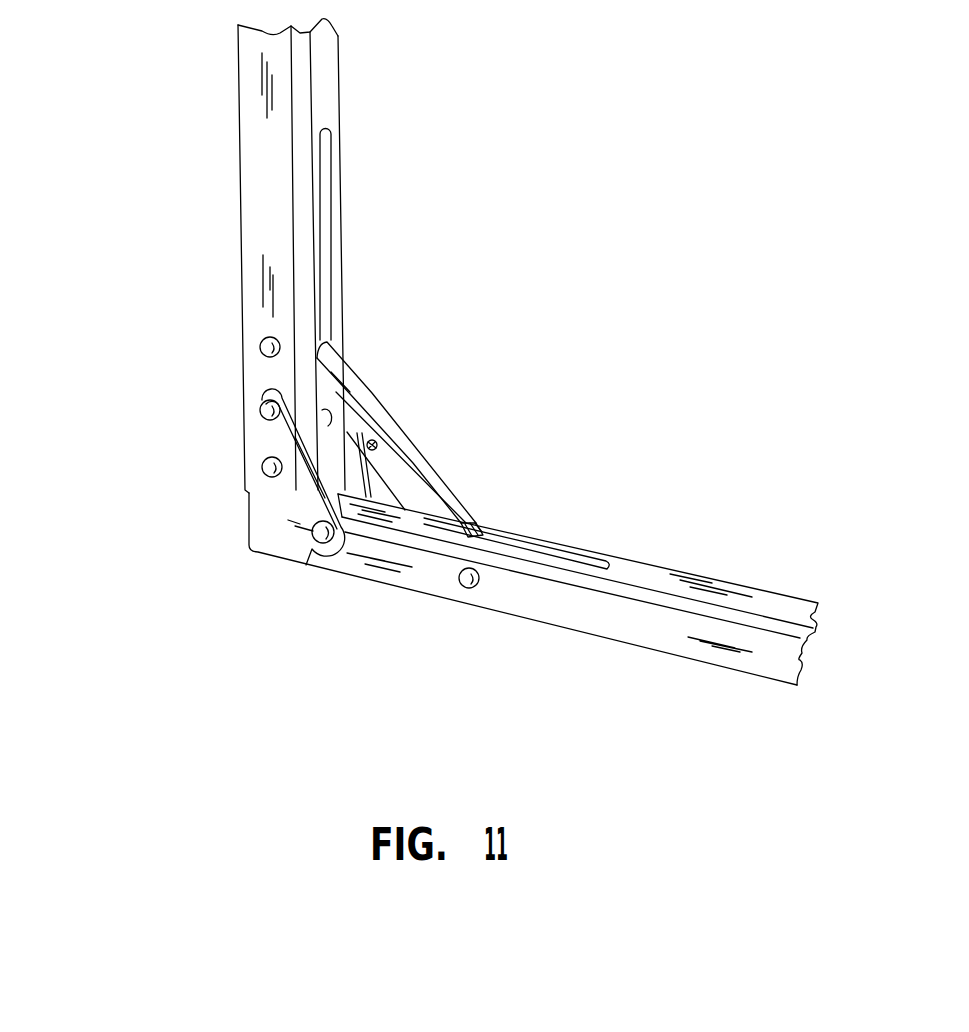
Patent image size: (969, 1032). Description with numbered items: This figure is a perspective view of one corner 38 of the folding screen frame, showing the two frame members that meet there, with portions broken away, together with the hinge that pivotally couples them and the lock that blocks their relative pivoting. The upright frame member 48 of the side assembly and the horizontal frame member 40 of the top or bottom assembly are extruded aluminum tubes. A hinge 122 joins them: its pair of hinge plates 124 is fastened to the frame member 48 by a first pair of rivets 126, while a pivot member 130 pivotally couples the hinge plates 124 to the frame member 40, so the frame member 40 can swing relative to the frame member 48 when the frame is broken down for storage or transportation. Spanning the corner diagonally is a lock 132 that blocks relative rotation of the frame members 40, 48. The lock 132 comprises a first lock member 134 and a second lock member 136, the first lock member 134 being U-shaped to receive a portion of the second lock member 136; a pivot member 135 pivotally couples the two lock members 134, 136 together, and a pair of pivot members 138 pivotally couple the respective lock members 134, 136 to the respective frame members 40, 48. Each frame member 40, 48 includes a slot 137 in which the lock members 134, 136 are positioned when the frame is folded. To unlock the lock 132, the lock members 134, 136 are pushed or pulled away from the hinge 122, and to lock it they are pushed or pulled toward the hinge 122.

The fourth corner 38 is at (672, 293).
The right tubular frame member 40 is at (618, 627).
The bottom tubular frame member 48 is at (330, 88).
The hinge 122 is at (183, 486).
The hinge plates 124 is at (365, 476).
The first pair of rivets 126 is at (263, 462).
The pivot member 130 is at (320, 541).
The lock 132 is at (397, 340).
The first lock member 134 is at (370, 402).
The pivot member 135 is at (377, 443).
The second lock member 136 is at (487, 522).
The slot 137 is at (327, 162).
The pivot members 138 is at (262, 345).